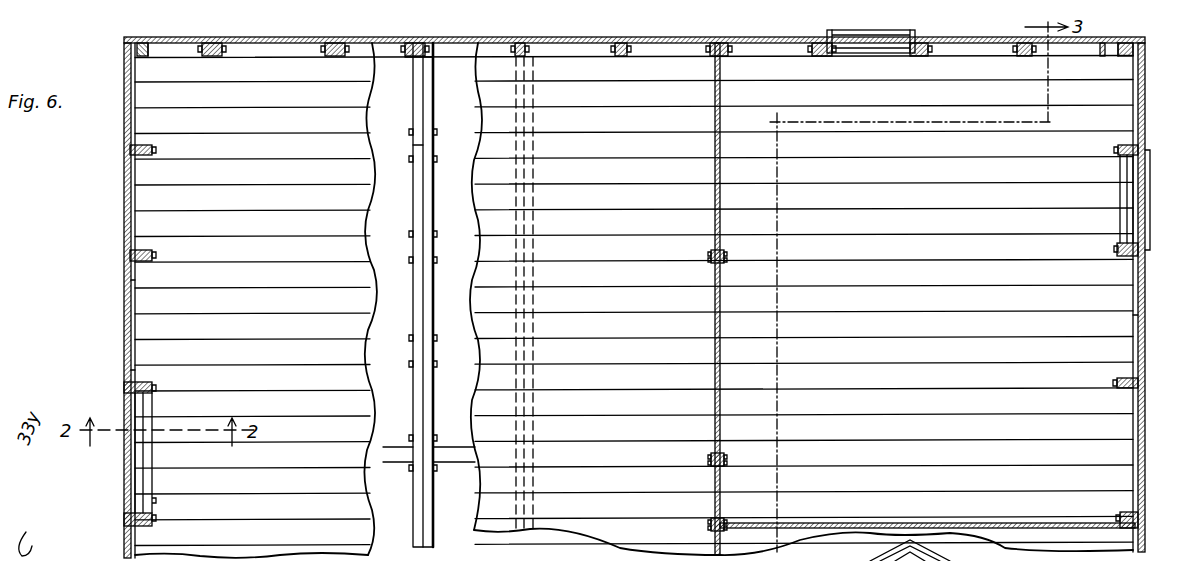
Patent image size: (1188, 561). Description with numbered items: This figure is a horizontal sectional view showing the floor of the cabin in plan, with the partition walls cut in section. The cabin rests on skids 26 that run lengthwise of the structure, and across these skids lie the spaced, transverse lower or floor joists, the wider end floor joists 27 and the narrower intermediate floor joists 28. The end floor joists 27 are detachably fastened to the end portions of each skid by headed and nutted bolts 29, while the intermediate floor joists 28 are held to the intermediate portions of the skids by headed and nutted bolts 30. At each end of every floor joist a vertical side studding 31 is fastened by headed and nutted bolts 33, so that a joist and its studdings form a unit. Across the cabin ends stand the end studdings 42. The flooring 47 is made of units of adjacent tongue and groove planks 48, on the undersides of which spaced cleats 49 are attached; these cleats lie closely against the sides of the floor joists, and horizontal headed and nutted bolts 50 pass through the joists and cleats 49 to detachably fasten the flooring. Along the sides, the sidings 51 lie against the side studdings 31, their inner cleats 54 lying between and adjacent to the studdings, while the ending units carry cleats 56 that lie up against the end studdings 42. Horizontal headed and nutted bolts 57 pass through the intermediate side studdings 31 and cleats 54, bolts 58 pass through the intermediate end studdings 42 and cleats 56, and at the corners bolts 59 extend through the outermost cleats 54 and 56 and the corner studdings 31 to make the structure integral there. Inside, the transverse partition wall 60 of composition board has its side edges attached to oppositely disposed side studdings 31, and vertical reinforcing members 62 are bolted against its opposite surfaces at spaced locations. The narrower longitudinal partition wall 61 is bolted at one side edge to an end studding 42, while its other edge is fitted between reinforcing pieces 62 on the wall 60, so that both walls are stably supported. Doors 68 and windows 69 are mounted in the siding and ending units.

The skid 26 is at (440, 50).
The end floor joist 27 is at (136, 120).
The intermediate floor joist 28 is at (430, 132).
The headed and nutted bolt 29 is at (135, 60).
The headed and nutted bolt 30 is at (423, 56).
The side studding 31 is at (330, 50).
The headed and nutted bolt 33 is at (433, 43).
The end studding 42 is at (150, 250).
The flooring 47 is at (130, 325).
The plank 48 is at (130, 358).
The cleat 49 is at (412, 302).
The headed and nutted bolt 50 is at (436, 257).
The siding 51 is at (128, 280).
The cleat 54 is at (517, 54).
The cleat 56 is at (128, 48).
The headed and nutted bolt 57 is at (528, 56).
The headed and nutted bolt 58 is at (156, 150).
The headed and nutted bolt 59 is at (214, 43).
The transverse partition wall 60 is at (712, 173).
The longitudinal partition wall 61 is at (940, 523).
The reinforcing member 62 is at (708, 255).
The door 68 is at (152, 455).
The window 69 is at (870, 52).